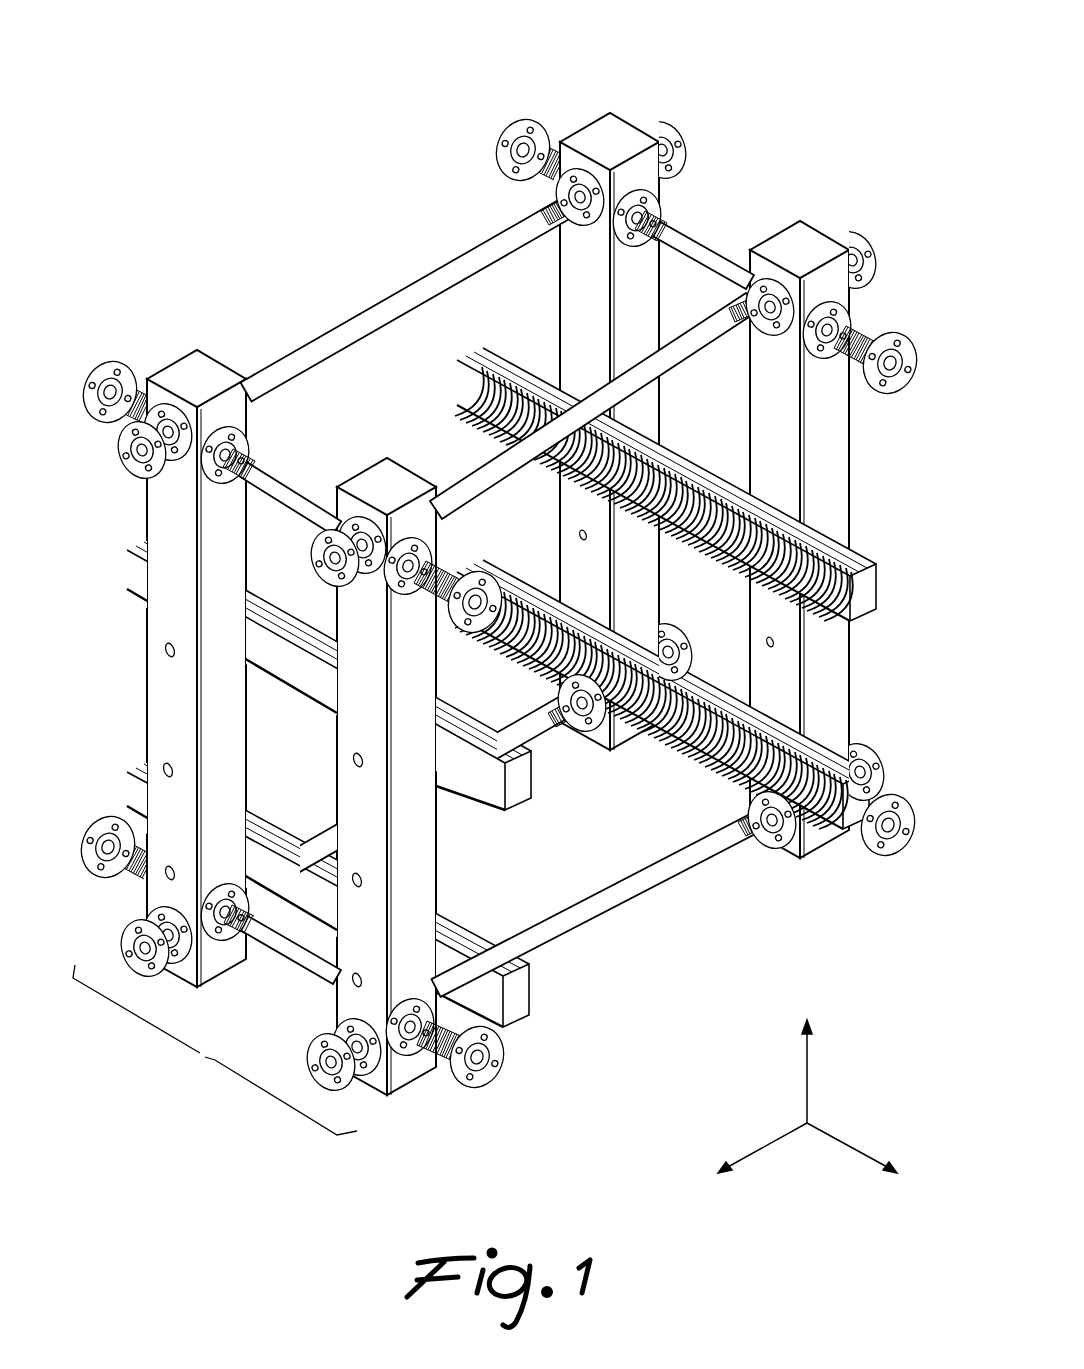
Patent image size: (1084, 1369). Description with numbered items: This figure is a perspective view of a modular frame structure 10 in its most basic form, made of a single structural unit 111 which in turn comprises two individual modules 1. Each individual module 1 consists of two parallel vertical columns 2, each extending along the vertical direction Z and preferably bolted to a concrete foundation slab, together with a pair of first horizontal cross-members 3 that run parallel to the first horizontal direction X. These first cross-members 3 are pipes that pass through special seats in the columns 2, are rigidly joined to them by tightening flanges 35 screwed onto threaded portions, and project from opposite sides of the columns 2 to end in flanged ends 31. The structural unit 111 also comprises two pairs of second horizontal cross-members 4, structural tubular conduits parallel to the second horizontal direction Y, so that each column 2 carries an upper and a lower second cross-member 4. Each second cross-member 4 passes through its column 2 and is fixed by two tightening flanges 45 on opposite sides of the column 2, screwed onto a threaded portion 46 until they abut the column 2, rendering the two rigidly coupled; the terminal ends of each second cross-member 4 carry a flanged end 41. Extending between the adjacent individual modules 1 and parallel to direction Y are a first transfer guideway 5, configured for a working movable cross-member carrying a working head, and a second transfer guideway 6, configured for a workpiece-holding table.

The individual module 1 is at (562, 110).
The vertical column 2 is at (489, 586).
The first horizontal cross-member 3 is at (676, 355).
The second horizontal cross-member 4 is at (705, 248).
The first transfer guideway 5 is at (542, 785).
The second transfer guideway 6 is at (540, 1002).
The modular frame structure 10 is at (772, 220).
The flanged end 31 is at (658, 130).
The tightening flange 35 is at (172, 415).
The flanged end 41 is at (505, 147).
The tightening flange 45 is at (652, 195).
The threaded portion 46 is at (540, 170).
The structural unit 111 is at (200, 1060).